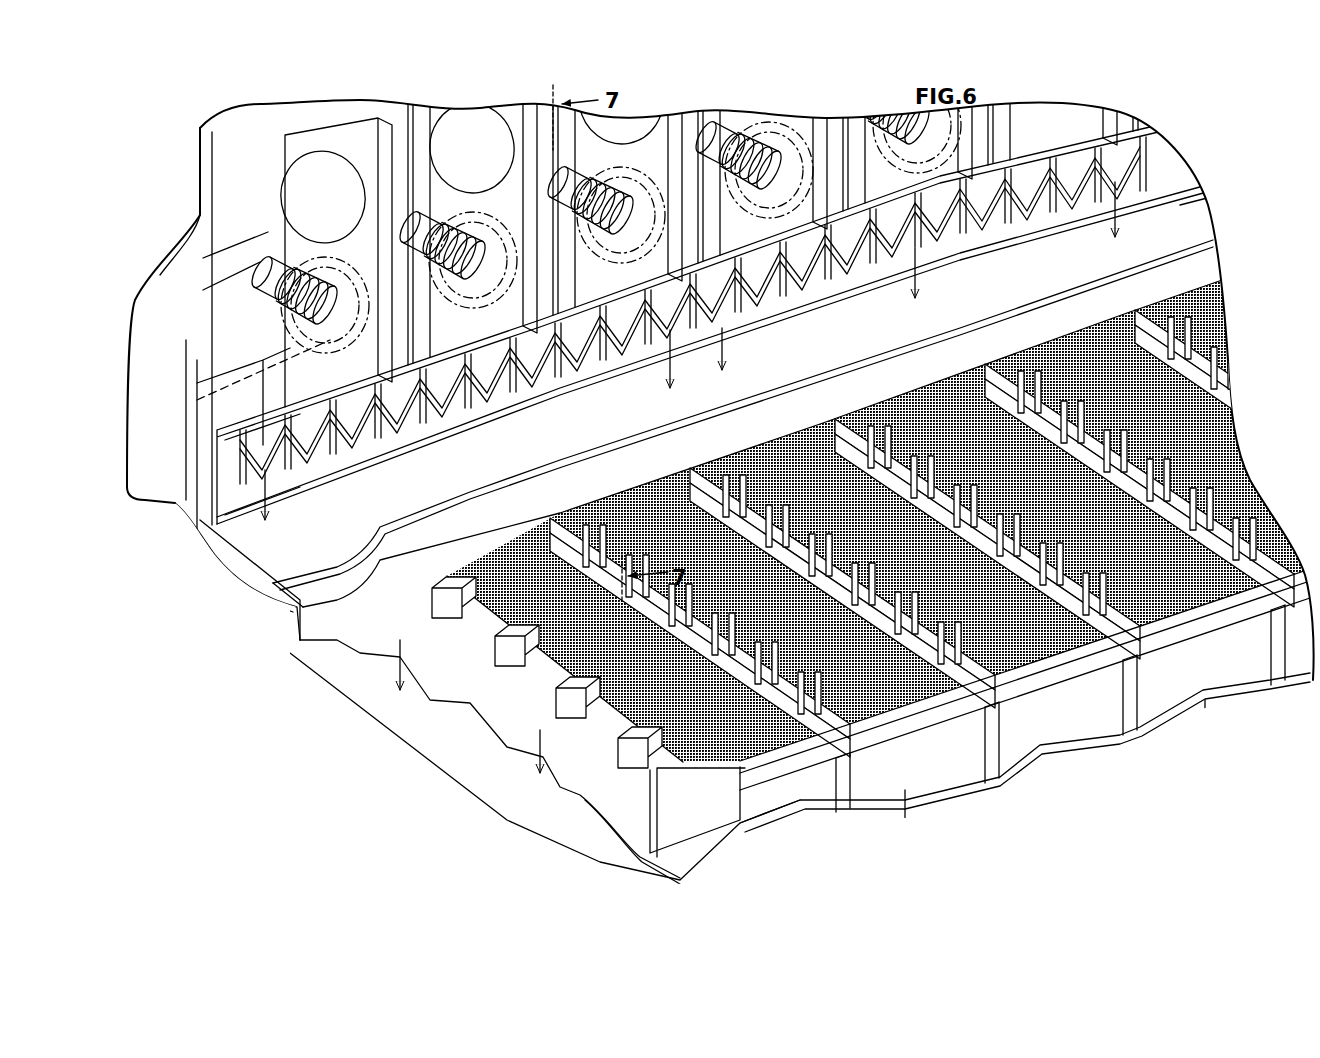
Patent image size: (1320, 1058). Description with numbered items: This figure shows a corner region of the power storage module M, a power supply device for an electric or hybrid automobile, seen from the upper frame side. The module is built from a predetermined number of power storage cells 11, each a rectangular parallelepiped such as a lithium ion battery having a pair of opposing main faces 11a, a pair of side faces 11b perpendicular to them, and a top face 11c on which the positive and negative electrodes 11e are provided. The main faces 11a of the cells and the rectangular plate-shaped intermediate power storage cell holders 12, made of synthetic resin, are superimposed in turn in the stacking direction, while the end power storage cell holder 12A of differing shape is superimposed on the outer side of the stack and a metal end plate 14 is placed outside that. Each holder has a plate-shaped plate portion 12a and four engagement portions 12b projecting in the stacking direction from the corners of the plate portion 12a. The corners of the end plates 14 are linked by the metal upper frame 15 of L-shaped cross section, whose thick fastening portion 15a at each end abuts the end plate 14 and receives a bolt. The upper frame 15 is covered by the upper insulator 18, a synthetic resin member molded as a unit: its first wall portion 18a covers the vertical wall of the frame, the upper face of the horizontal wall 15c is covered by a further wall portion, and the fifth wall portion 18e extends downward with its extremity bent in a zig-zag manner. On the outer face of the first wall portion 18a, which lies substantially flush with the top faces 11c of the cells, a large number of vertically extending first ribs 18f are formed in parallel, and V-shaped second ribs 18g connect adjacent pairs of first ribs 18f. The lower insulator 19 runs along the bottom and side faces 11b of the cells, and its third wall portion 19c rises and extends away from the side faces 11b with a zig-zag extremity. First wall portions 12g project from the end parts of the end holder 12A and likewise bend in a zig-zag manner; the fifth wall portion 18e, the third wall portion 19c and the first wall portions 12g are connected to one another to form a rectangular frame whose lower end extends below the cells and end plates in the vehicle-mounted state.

The power storage module M is at (240, 648).
The power storage cell 11 is at (278, 168).
The main face 11a is at (1120, 528).
The side face 11b is at (1195, 547).
The top face 11c is at (350, 138).
The electrode 11e is at (297, 277).
The intermediate power storage cell holder 12 is at (850, 800).
The end power storage cell holder 12A is at (357, 717).
The plate portion 12a is at (1140, 485).
The engagement portion 12b is at (820, 790).
The first wall portion 12g is at (508, 735).
The end plate 14 is at (158, 492).
The upper frame 15 is at (1215, 215).
The fastening portion 15a is at (205, 428).
The horizontal wall 15c is at (1180, 236).
The upper insulator 18 is at (1055, 148).
The first wall portion 18a is at (323, 417).
The fifth wall portion 18e is at (592, 470).
The first rib 18f is at (858, 278).
The second rib 18g is at (625, 325).
The lower insulator 19 is at (1018, 770).
The third wall portion 19c is at (1140, 738).